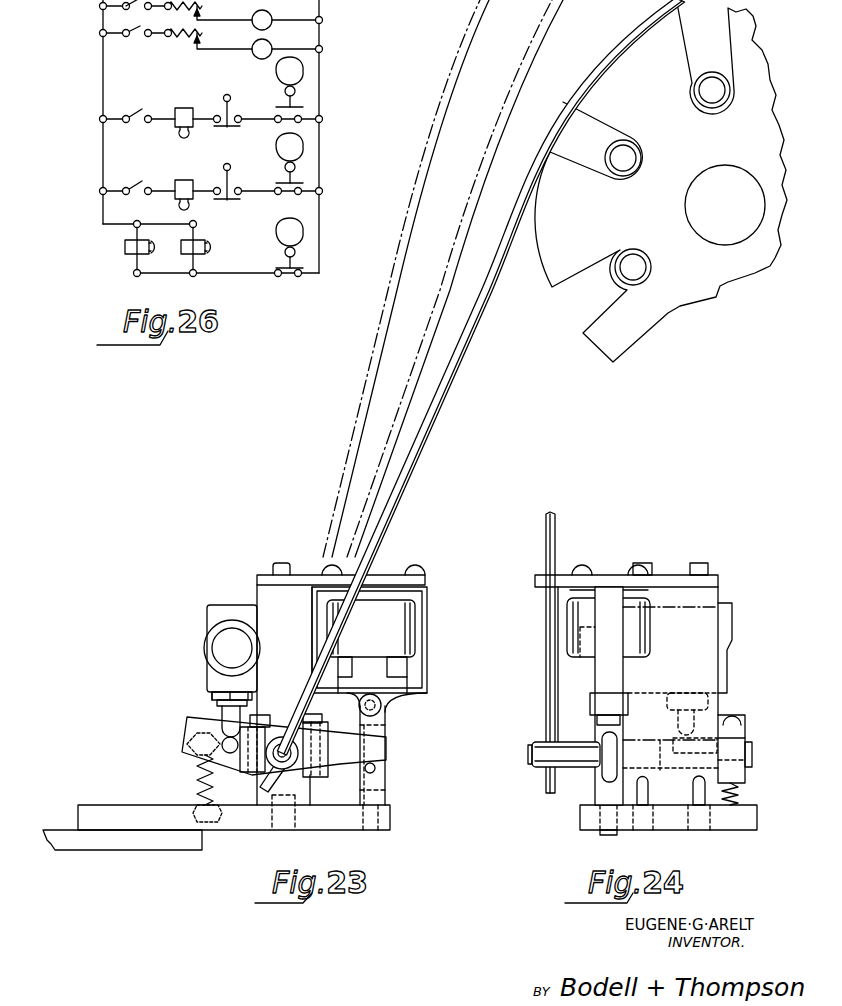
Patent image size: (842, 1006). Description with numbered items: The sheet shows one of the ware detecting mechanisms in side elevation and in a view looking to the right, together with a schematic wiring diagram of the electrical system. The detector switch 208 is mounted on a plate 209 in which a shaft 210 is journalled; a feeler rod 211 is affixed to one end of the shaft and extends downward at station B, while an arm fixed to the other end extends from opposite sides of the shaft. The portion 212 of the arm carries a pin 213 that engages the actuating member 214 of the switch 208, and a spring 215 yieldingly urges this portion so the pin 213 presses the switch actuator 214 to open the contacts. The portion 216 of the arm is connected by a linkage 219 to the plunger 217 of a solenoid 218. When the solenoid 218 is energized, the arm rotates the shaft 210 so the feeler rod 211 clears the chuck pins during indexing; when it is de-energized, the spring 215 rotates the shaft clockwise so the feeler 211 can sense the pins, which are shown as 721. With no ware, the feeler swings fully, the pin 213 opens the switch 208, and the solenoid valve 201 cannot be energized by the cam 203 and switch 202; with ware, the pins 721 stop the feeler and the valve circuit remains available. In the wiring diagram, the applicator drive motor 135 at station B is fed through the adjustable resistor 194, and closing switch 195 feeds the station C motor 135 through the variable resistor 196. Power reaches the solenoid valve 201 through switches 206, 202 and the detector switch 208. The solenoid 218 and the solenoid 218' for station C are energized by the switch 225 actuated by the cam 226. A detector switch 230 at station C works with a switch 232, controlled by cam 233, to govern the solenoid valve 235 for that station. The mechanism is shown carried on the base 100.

In FIG. 23, the base plate 100 is at (391, 818).
In FIG. 24, the base plate 100 is at (757, 818).
In FIG. 26, the applicator drive motor 135 is at (262, 46).
In FIG. 26, the adjustable resistor 194 is at (165, 8).
In FIG. 26, the switch 195 is at (138, 31).
In FIG. 26, the variable resistor 196 is at (165, 35).
In FIG. 26, the solenoid actuated valve 201 is at (180, 108).
In FIG. 26, the switch 202 is at (283, 105).
In FIG. 26, the cam 203 is at (276, 71).
In FIG. 26, the switch 206 is at (130, 110).
In FIG. 26, the switch 208 is at (226, 128).
In FIG. 23, the switch 208 is at (206, 667).
In FIG. 23, the plate 209 is at (341, 684).
In FIG. 24, the plate 209 is at (598, 688).
In FIG. 23, the shaft 210 is at (283, 742).
In FIG. 24, the shaft 210 is at (580, 770).
In FIG. 23, the feeler rod 211 is at (427, 445).
In FIG. 24, the feeler rod 211 is at (556, 523).
In FIG. 23, the portion of the arm 212 is at (186, 740).
In FIG. 23, the pin 213 is at (230, 754).
In FIG. 24, the pin 213 is at (661, 744).
In FIG. 23, the actuating member 214 is at (221, 712).
In FIG. 23, the spring 215 is at (197, 793).
In FIG. 23, the portion of the arm 216 is at (343, 758).
In FIG. 23, the plunger 217 is at (372, 675).
In FIG. 26, the solenoid 218 is at (205, 255).
In FIG. 23, the solenoid 218 is at (369, 640).
In FIG. 26, the solenoid 218' is at (122, 247).
In FIG. 23, the linkage 219 is at (386, 737).
In FIG. 26, the switch 225 is at (281, 265).
In FIG. 26, the cam 226 is at (276, 232).
In FIG. 26, the detector switch 230 is at (233, 202).
In FIG. 26, the switch 232 is at (283, 180).
In FIG. 26, the cam 233 is at (276, 147).
In FIG. 26, the solenoid valve 235 is at (180, 180).
In FIG. 23, the pins 721 is at (724, 70).